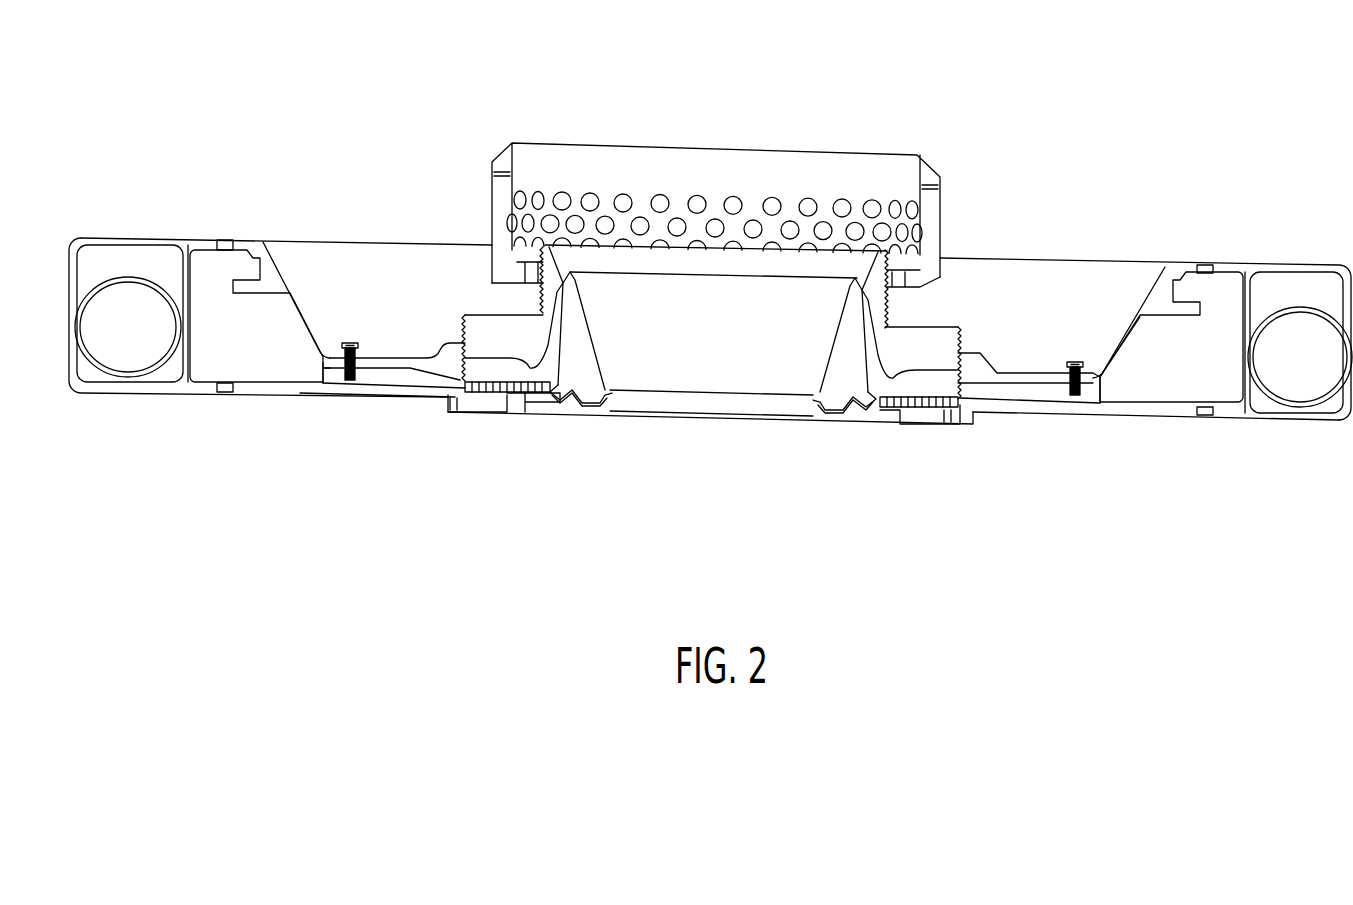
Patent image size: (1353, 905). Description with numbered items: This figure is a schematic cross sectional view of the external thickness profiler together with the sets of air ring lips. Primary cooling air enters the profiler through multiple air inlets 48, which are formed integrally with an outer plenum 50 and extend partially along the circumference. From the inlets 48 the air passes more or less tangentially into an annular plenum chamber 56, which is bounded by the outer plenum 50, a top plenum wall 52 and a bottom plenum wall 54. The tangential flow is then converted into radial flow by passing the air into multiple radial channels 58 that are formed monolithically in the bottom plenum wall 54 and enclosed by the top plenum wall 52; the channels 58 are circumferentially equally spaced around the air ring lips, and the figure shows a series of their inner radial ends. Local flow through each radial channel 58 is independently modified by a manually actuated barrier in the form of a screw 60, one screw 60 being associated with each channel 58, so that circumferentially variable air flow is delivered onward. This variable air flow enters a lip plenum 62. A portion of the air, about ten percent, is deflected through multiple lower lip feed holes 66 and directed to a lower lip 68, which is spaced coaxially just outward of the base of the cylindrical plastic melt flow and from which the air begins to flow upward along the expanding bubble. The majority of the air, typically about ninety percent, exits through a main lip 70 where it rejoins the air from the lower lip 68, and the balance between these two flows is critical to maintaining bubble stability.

The air inlet 48 is at (1298, 367).
The outer plenum 50 is at (1300, 268).
The top plenum wall 52 is at (1153, 278).
The bottom plenum wall 54 is at (1177, 403).
The annular plenum chamber 56 is at (1182, 358).
The radial channel 58 is at (1023, 392).
The screw 60 is at (350, 385).
The lip plenum 62 is at (490, 397).
The lower lip feed hole 66 is at (527, 397).
The lower lip 68 is at (610, 397).
The main lip 70 is at (567, 270).